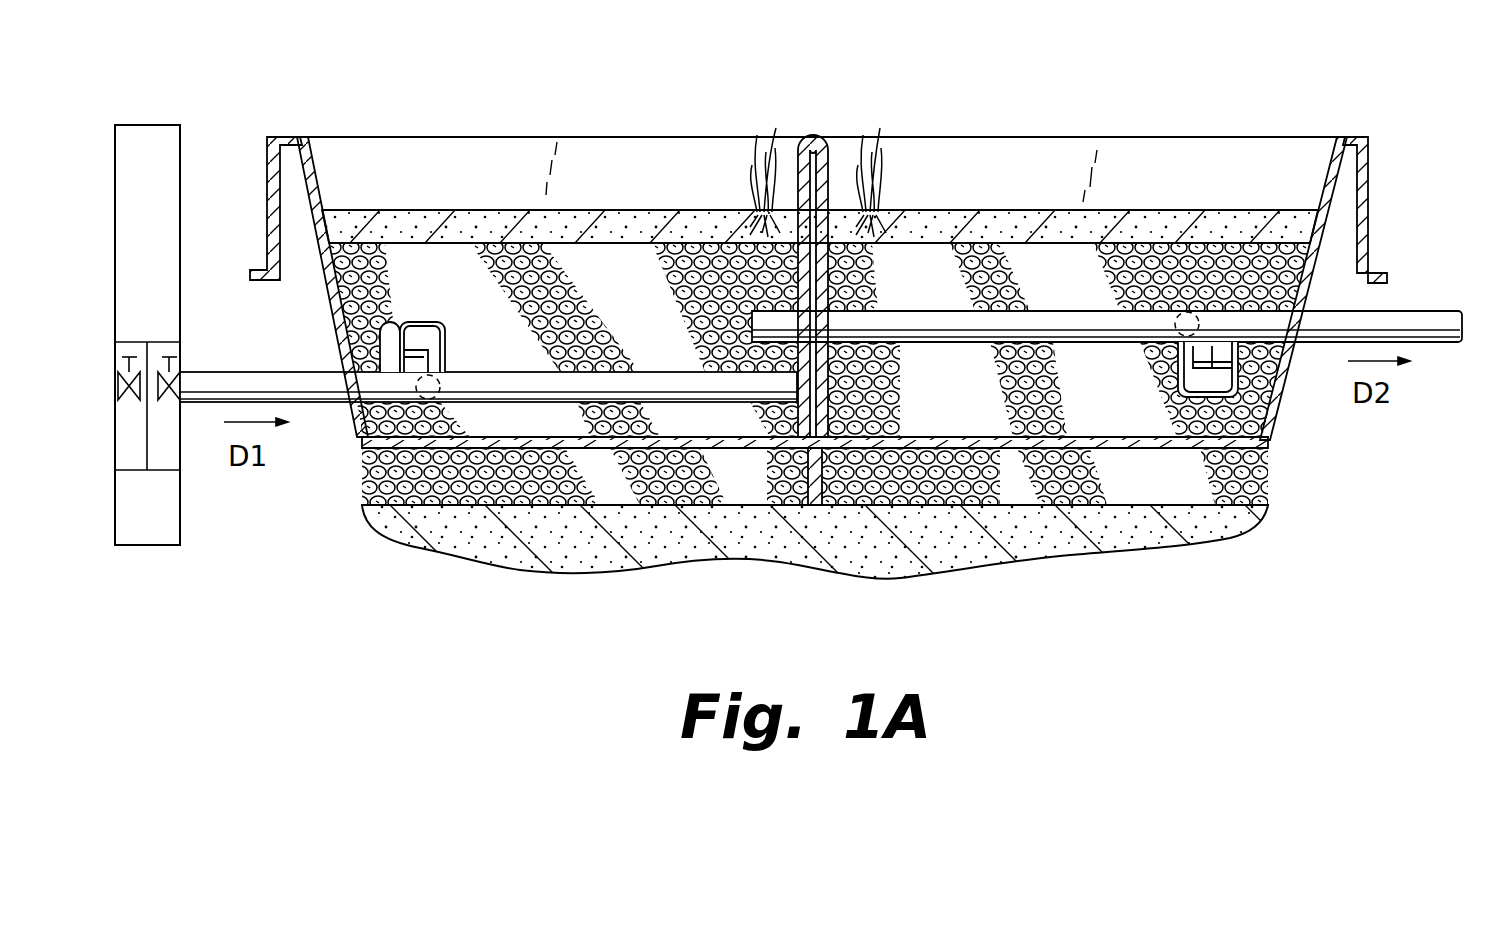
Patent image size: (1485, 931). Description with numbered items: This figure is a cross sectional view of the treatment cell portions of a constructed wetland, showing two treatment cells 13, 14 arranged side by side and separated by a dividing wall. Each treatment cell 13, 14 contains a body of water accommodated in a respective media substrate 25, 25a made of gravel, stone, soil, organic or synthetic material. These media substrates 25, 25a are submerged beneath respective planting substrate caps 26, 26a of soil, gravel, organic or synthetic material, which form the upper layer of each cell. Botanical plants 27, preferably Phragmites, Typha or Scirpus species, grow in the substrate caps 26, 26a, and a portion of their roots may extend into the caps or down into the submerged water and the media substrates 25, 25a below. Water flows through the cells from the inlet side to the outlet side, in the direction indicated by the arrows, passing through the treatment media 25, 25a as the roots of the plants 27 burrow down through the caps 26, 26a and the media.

The treatment cell 13 is at (487, 124).
The treatment cell 14 is at (1164, 124).
The media substrate 25 is at (645, 321).
The media substrate 25a is at (1134, 411).
The planting substrate cap 26 is at (377, 218).
The planting substrate cap 26a is at (1260, 223).
The botanical plants 27 is at (757, 130).